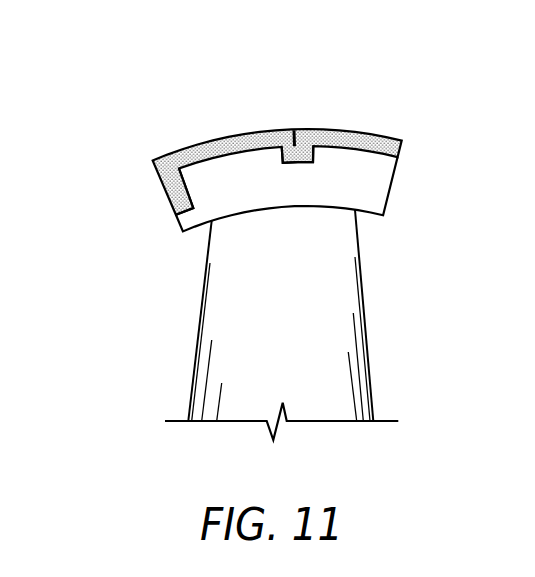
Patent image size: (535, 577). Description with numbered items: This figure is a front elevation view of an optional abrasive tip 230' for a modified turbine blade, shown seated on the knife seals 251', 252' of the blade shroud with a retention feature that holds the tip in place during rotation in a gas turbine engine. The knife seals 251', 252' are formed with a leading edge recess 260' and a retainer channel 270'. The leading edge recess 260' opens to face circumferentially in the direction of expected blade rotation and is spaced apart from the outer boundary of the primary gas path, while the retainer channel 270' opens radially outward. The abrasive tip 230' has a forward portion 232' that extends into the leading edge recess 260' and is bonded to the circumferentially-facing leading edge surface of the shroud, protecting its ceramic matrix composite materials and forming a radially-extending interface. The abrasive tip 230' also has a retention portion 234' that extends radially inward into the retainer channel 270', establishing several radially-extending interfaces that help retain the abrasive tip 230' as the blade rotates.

The knife seal 251' is at (261, 131).
The knife seal 252' is at (261, 138).
The abrasive tip 230' is at (277, 122).
The retention portion 234' is at (313, 107).
The forward portion 232' is at (126, 192).
The leading edge recess 260' is at (229, 202).
The retainer channel 270' is at (372, 174).